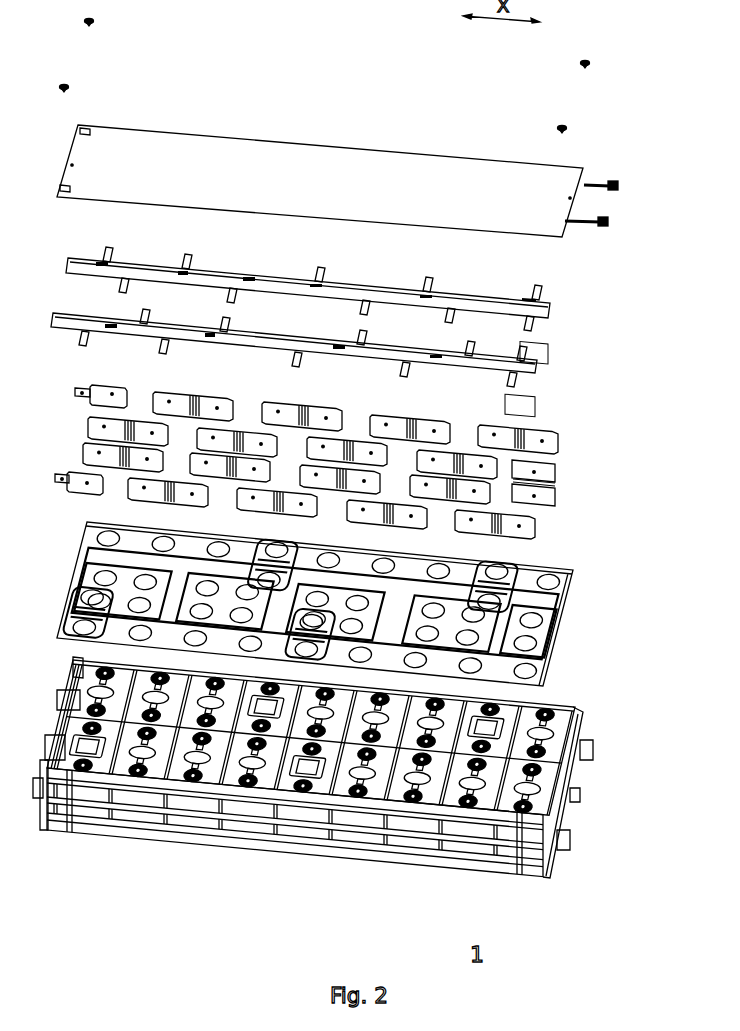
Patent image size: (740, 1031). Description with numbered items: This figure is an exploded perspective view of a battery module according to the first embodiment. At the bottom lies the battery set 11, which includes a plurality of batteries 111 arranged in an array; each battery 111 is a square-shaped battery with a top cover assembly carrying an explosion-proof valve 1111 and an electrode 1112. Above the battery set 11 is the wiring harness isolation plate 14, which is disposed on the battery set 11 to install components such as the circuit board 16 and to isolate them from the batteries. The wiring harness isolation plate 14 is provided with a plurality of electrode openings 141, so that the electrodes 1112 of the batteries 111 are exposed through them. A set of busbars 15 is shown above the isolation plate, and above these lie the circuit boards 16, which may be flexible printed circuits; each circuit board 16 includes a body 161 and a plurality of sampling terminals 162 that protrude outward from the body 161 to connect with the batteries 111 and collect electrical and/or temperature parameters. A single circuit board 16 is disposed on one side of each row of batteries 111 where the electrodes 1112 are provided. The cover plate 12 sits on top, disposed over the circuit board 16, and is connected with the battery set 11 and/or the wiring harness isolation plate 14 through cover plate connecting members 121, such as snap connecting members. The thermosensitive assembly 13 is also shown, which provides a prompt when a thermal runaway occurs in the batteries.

The battery set 11 is at (327, 790).
The battery 111 is at (130, 808).
The explosion-proof valve 1111 is at (247, 767).
The electrode 1112 is at (297, 787).
The cover plate 12 is at (557, 183).
The cover plate connecting member 121 is at (590, 65).
The thermosensitive assembly 13 is at (600, 189).
The wiring harness isolation plate 14 is at (340, 604).
The electrode opening 141 is at (513, 613).
The busbar 15 is at (507, 498).
The circuit board 16 is at (361, 332).
The body 161 is at (530, 316).
The sampling terminal 162 is at (537, 297).